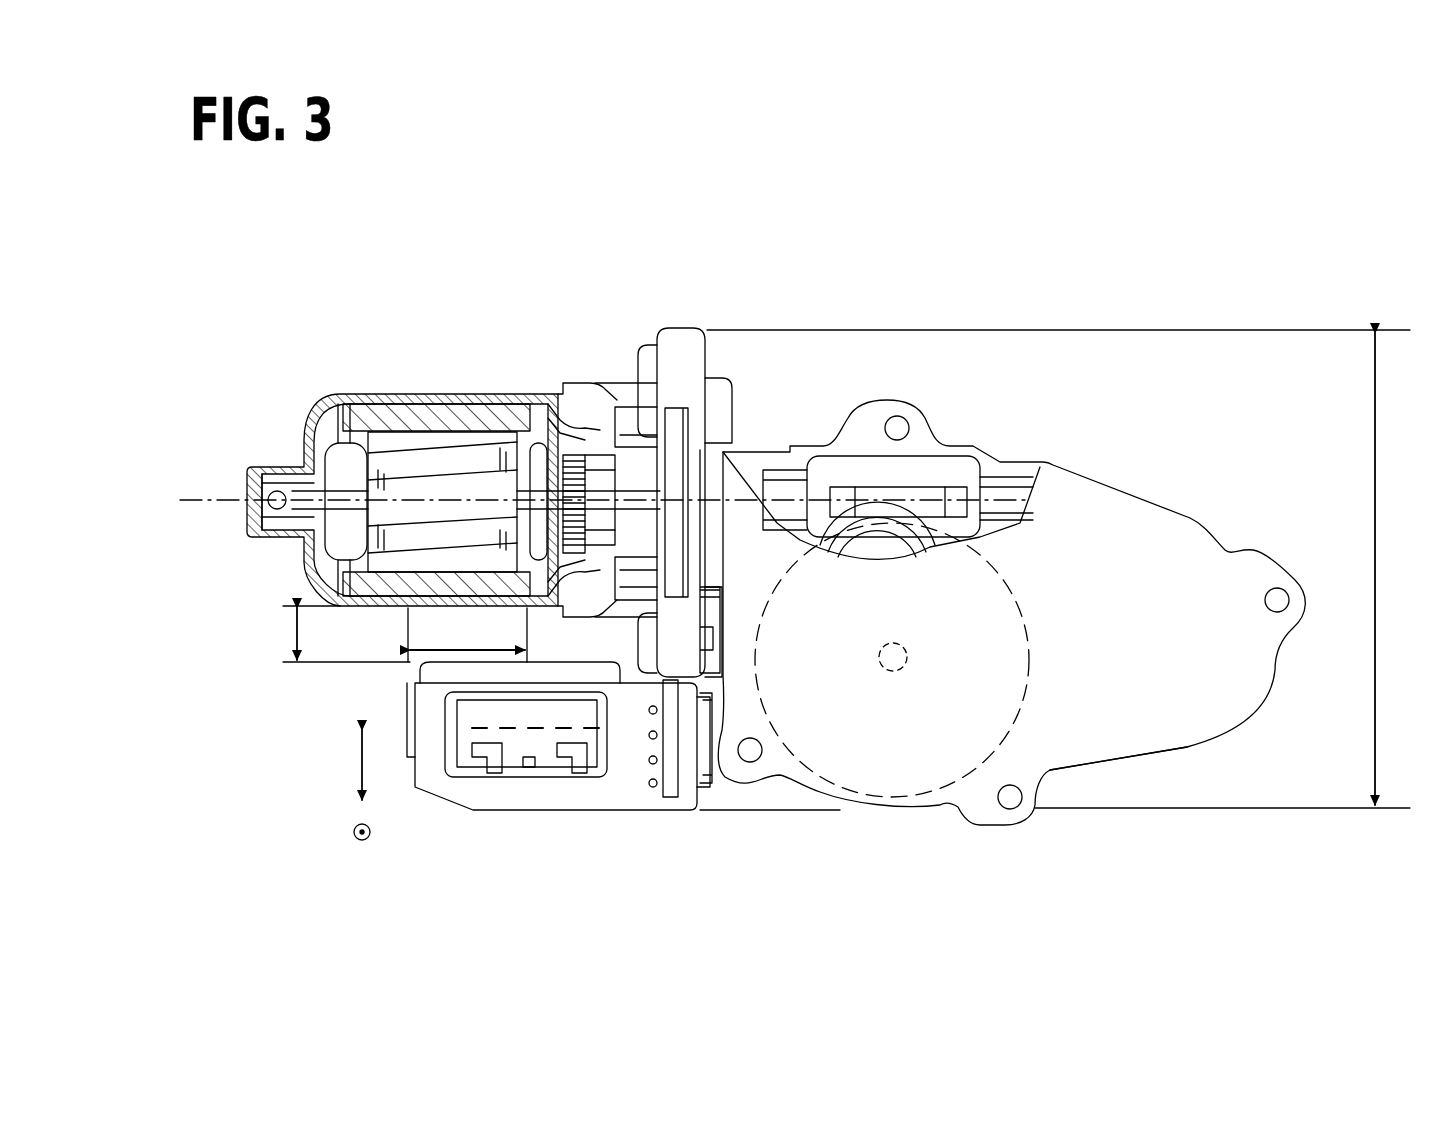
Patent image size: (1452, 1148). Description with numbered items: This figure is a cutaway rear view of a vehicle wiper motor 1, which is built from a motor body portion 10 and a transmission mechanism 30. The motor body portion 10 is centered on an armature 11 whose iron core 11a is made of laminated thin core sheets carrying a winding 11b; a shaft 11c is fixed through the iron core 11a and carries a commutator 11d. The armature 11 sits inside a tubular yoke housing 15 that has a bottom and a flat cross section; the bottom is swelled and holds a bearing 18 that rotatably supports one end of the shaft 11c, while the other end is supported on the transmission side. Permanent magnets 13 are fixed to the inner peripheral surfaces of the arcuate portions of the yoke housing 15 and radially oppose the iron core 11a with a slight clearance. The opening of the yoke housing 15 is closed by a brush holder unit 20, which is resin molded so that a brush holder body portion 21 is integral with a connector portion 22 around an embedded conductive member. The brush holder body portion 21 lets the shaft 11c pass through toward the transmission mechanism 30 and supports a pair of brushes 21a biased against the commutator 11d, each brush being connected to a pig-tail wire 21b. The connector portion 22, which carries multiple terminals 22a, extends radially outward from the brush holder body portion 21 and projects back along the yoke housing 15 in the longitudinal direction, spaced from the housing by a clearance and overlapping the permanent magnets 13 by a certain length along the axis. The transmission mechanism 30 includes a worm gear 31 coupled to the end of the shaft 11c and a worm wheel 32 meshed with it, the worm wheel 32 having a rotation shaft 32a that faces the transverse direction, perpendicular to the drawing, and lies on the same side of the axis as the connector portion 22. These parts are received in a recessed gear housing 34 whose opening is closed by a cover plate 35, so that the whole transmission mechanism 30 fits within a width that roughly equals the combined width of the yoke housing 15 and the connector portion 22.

The motor 1 is at (772, 563).
The motor body portion 10 is at (403, 423).
The armature 11 is at (419, 444).
The iron core 11a is at (476, 421).
The winding 11b is at (264, 500).
The shaft 11c is at (239, 450).
The commutator 11d is at (617, 444).
The permanent magnets 13 is at (402, 440).
The yoke housing 15 is at (436, 435).
The bearing 18 is at (222, 463).
The brush holder unit 20 is at (981, 644).
The brush holder body portion 21 is at (683, 567).
The brushes 21a is at (571, 606).
The pig-tail wire 21b is at (563, 382).
The connector portion 22 is at (558, 786).
The terminals 22a is at (518, 819).
The transmission mechanism 30 is at (1011, 644).
The worm gear 31 is at (881, 446).
The worm wheel 32 is at (892, 739).
The rotation shaft 32a is at (859, 781).
The gear housing 34 is at (859, 387).
The cover plate 35 is at (1139, 770).